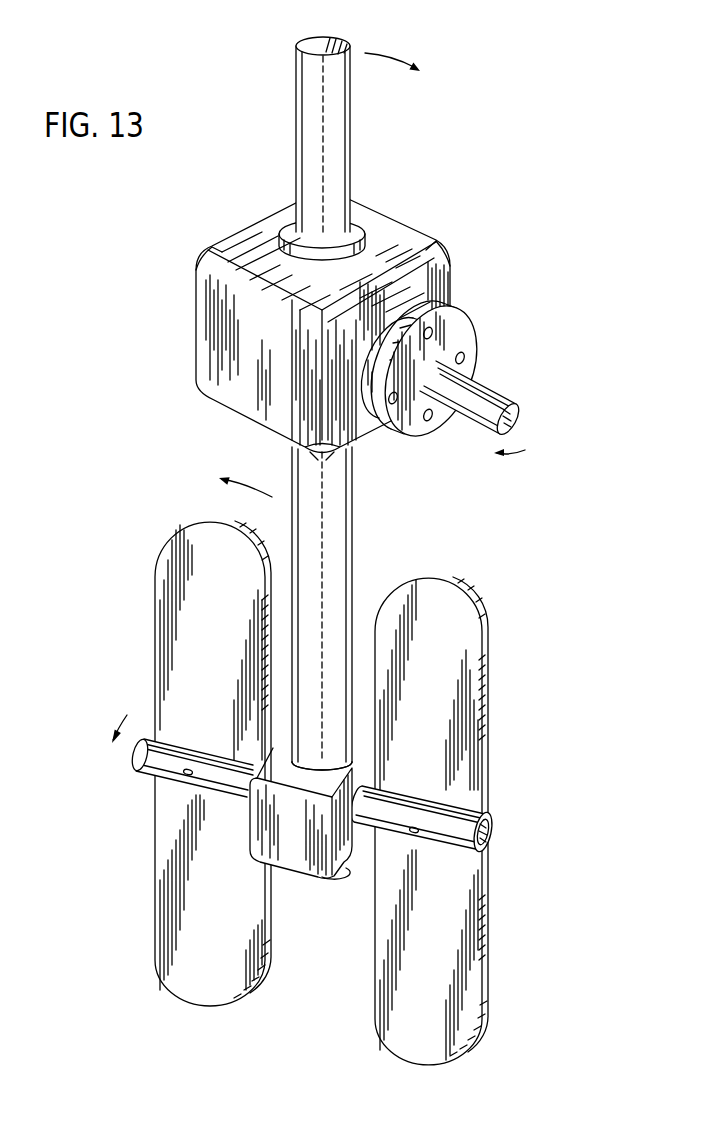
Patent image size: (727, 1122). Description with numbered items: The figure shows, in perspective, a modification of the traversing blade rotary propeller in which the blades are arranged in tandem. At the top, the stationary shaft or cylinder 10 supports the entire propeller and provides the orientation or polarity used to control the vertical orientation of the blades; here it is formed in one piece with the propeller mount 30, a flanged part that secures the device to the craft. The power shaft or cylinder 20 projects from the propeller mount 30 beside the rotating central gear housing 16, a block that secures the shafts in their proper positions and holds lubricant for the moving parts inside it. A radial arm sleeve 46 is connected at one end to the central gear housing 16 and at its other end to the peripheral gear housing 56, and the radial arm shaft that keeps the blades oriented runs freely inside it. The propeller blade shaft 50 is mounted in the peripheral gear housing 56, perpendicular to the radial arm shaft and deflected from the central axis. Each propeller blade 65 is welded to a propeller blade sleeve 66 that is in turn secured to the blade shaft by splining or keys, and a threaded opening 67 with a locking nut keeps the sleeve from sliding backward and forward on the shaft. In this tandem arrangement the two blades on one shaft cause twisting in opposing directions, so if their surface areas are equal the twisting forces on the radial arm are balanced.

The stationary shaft or cylinder 10 is at (366, 352).
The central gear housing 16 is at (380, 206).
The power shaft or cylinder 20 is at (518, 427).
The propeller mount 30 is at (472, 336).
The radial arm sleeve 46 is at (351, 93).
The propeller blade shaft 50 is at (490, 845).
The peripheral gear housing 56 is at (322, 880).
The propeller blade 65 is at (176, 530).
The propeller blade sleeve 66 is at (218, 792).
The threaded opening 67 is at (184, 769).